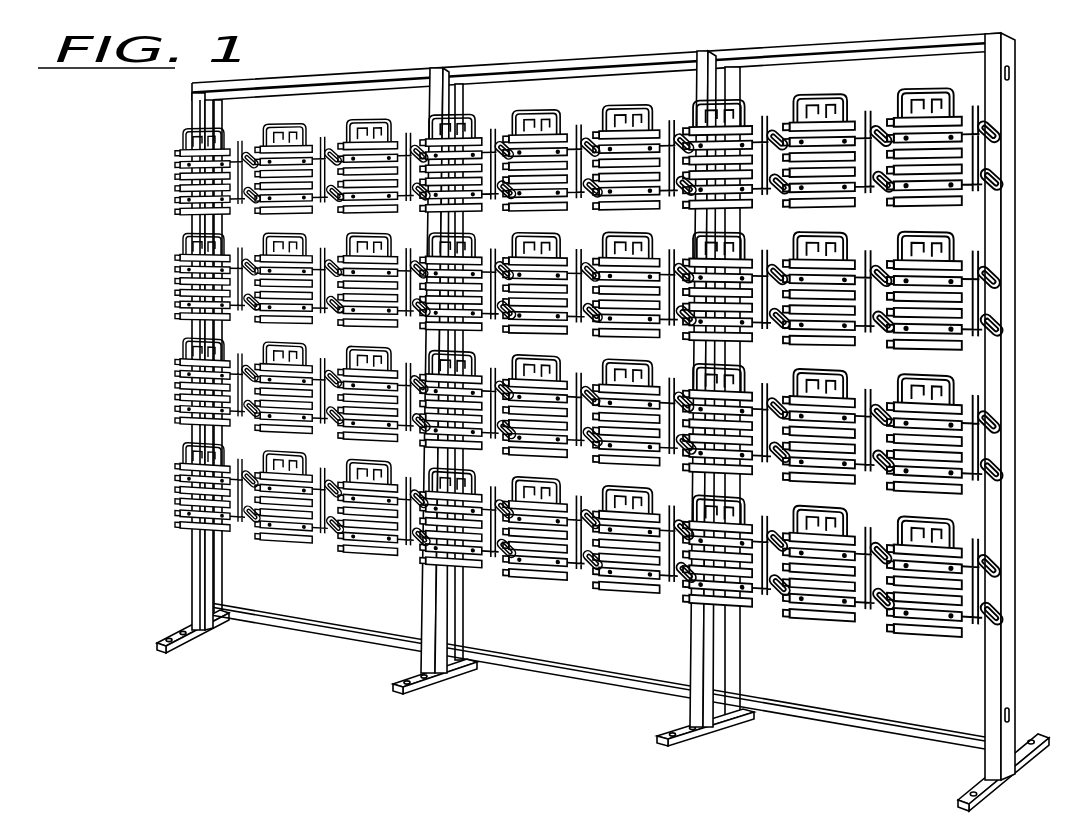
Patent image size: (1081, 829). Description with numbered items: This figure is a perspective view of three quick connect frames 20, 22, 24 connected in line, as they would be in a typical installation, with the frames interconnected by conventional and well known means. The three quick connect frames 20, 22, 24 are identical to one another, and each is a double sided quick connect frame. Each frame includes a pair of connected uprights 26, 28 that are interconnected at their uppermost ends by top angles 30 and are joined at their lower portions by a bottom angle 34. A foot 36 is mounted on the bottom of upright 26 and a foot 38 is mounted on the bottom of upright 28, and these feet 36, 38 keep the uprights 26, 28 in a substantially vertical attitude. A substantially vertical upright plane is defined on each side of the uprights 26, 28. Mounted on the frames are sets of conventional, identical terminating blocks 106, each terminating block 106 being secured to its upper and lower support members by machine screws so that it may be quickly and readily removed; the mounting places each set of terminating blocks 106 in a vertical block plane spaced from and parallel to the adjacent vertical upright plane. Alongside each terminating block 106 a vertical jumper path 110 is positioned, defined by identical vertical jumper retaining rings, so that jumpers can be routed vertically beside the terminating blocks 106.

The quick connect frame 20 is at (340, 75).
The quick connect frame 22 is at (565, 60).
The quick connect frame 24 is at (793, 47).
The upright 26 is at (215, 588).
The upright 28 is at (421, 622).
The top angle 30 is at (366, 80).
The bottom angle 34 is at (316, 628).
The foot 36 is at (160, 652).
The foot 38 is at (392, 690).
The terminating block 106 is at (168, 173).
The vertical jumper path 110 is at (980, 325).